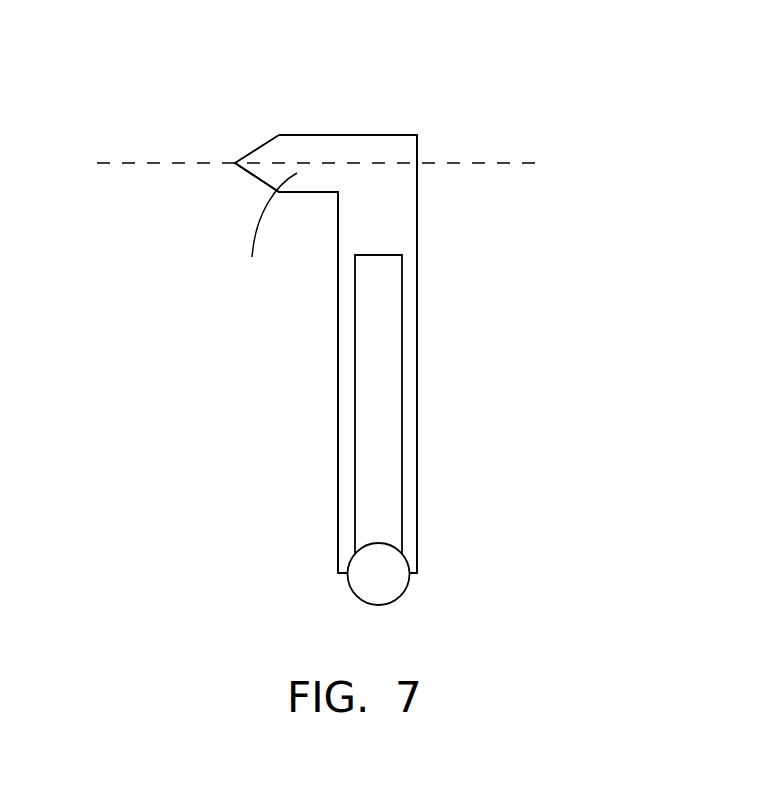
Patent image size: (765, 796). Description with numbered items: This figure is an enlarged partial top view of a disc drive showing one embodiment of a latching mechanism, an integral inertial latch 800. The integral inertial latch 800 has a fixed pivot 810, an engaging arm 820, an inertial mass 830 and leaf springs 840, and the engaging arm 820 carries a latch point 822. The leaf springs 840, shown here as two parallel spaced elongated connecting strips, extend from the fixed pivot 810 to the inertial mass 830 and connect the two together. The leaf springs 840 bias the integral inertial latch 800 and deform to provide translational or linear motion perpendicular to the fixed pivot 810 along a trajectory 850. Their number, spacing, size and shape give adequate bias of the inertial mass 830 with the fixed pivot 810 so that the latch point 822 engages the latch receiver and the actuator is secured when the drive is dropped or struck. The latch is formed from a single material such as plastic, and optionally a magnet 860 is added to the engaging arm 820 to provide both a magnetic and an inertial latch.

The integral inertial latch 800 is at (468, 108).
The fixed pivot 810 is at (398, 590).
The engaging arm 820 is at (308, 193).
The latch point 822 is at (256, 181).
The inertial mass 830 is at (398, 192).
The leaf springs 840 is at (402, 405).
The trajectory 850 is at (157, 163).
The magnet 860 is at (262, 233).